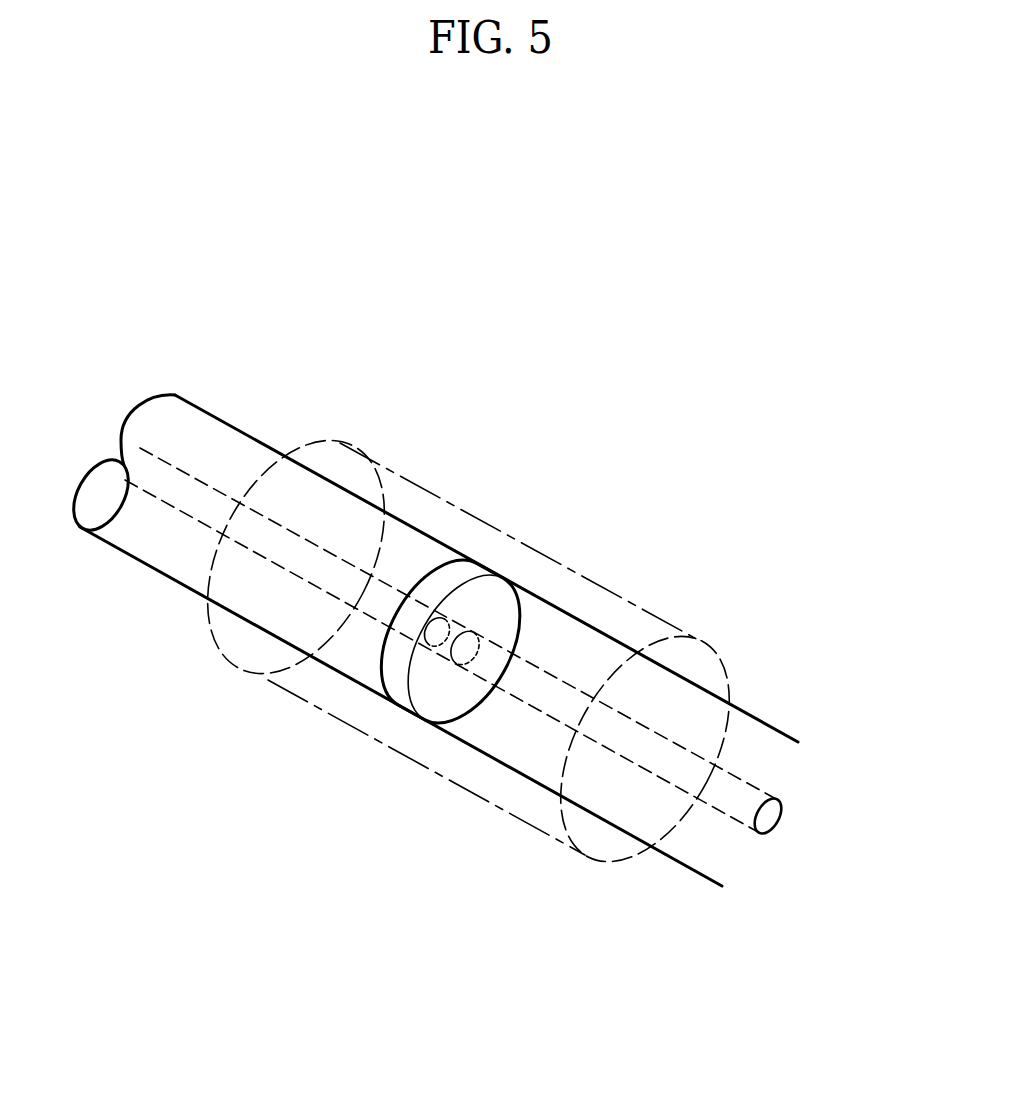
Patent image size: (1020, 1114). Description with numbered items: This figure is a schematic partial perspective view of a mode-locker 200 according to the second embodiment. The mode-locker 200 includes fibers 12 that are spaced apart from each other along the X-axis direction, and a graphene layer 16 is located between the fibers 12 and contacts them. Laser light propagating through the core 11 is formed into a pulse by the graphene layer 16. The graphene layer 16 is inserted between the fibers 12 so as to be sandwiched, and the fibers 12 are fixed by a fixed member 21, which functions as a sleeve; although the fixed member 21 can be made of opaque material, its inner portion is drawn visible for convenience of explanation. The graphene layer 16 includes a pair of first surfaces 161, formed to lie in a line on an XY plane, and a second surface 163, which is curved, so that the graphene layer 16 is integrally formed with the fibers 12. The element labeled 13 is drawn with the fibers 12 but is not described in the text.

The mode-locker 200 is at (484, 268).
The fibers 12 is at (485, 640).
The outer sheath 13 is at (765, 736).
The core 11 is at (772, 813).
The fixed member 21 is at (638, 610).
The graphene layer 16 is at (474, 558).
The first surfaces 161 is at (505, 593).
The second surface 163 is at (448, 578).